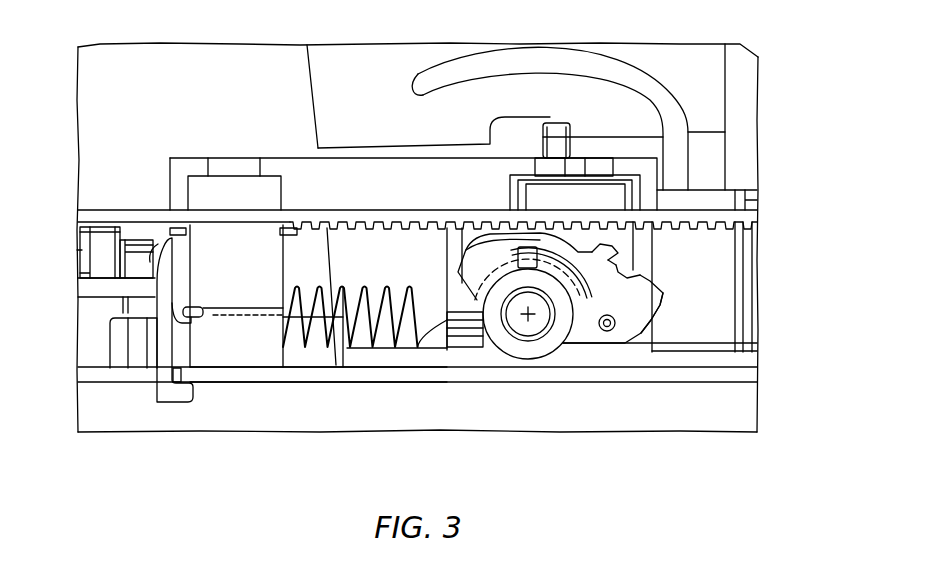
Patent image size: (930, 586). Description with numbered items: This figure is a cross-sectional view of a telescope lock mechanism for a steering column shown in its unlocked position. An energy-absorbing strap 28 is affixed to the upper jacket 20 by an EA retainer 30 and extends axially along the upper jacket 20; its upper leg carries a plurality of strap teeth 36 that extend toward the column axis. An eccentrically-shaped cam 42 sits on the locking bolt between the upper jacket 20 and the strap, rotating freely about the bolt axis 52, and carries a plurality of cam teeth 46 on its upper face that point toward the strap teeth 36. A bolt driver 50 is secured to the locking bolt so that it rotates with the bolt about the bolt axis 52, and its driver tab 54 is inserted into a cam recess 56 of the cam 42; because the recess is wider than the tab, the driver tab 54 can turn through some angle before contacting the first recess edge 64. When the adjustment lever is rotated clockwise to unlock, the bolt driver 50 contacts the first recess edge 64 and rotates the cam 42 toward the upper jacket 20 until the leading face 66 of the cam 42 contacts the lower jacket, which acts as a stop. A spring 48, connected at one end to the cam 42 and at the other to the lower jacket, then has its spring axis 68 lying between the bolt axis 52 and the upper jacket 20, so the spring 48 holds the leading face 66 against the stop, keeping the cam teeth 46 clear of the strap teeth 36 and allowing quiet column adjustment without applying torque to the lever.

The upper jacket 20 is at (383, 362).
The energy-absorbing strap 28 is at (483, 217).
The EA retainer 30 is at (238, 340).
The strap teeth 36 is at (606, 236).
The cam 42 is at (645, 310).
The cam teeth 46 is at (625, 258).
The spring 48 is at (300, 340).
The bolt driver 50 is at (585, 312).
The bolt axis 52 is at (528, 314).
The driver tab 54 is at (562, 277).
The cam recess 56 is at (527, 262).
The first recess edge 64 is at (590, 330).
The leading face 66 is at (600, 330).
The spring axis 68 is at (245, 308).